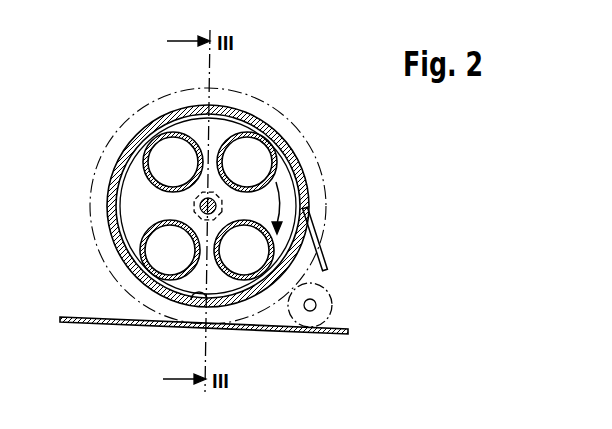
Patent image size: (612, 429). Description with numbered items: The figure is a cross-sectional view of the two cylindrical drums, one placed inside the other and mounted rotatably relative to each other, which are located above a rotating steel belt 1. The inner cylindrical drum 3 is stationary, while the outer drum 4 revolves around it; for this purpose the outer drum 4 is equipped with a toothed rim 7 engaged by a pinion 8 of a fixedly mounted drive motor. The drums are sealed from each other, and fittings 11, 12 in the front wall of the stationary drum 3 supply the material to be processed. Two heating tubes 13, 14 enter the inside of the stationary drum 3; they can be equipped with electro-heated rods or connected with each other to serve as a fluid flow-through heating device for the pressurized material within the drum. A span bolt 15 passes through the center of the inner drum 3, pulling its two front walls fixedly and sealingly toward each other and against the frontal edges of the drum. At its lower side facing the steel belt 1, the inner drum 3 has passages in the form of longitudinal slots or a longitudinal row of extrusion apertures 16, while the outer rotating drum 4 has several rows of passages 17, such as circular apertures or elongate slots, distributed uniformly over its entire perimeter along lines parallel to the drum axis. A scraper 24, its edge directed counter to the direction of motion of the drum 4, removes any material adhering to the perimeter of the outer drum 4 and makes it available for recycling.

The steel belt 1 is at (78, 318).
The inner cylindrical drum 3 is at (311, 190).
The outer cylindrical drum 4 is at (224, 106).
The toothed rim 7 is at (326, 284).
The pinion 8 is at (318, 332).
The fitting 11 is at (150, 250).
The fitting 12 is at (270, 294).
The heating tube 13 is at (275, 133).
The heating tube 14 is at (128, 150).
The span bolt 15 is at (194, 204).
The extrusion apertures 16 is at (194, 303).
The passages 17 is at (171, 111).
The scraper 24 is at (318, 248).